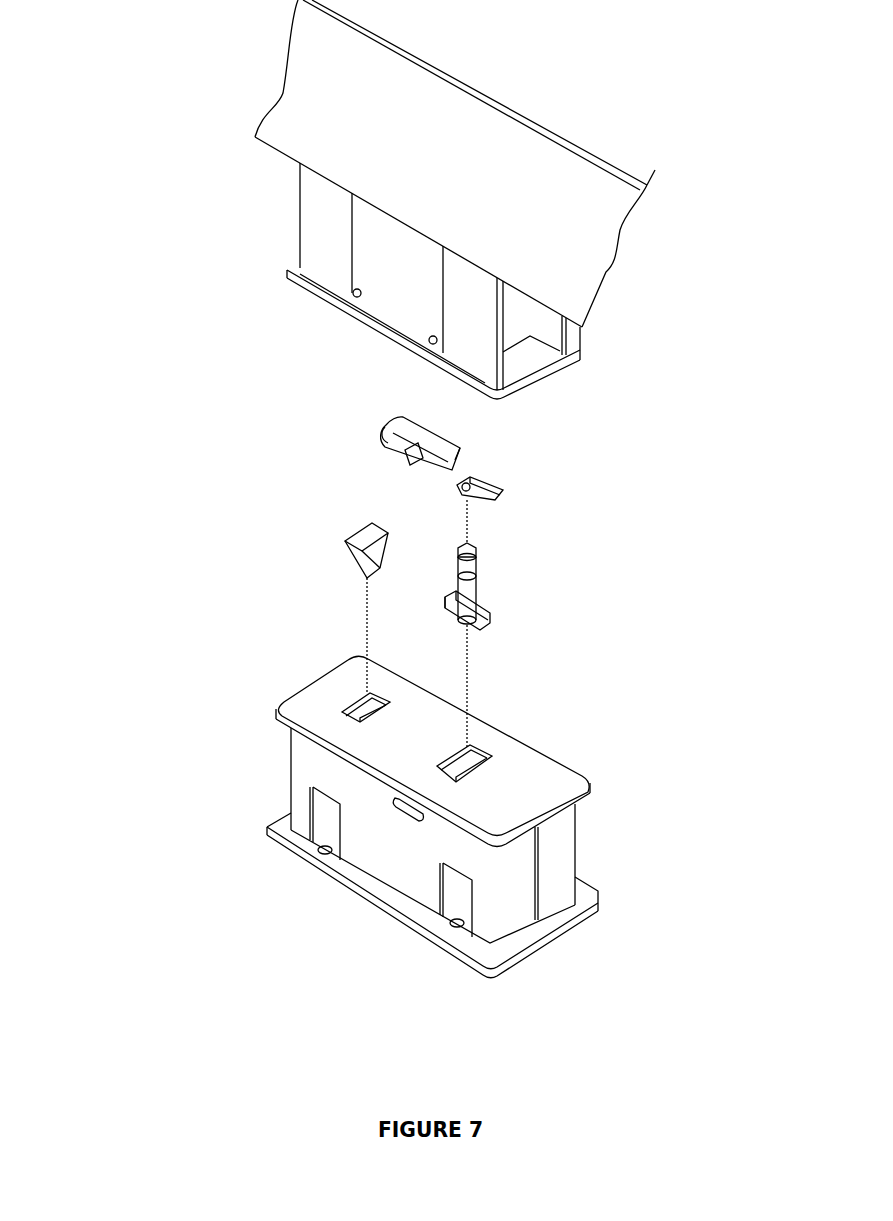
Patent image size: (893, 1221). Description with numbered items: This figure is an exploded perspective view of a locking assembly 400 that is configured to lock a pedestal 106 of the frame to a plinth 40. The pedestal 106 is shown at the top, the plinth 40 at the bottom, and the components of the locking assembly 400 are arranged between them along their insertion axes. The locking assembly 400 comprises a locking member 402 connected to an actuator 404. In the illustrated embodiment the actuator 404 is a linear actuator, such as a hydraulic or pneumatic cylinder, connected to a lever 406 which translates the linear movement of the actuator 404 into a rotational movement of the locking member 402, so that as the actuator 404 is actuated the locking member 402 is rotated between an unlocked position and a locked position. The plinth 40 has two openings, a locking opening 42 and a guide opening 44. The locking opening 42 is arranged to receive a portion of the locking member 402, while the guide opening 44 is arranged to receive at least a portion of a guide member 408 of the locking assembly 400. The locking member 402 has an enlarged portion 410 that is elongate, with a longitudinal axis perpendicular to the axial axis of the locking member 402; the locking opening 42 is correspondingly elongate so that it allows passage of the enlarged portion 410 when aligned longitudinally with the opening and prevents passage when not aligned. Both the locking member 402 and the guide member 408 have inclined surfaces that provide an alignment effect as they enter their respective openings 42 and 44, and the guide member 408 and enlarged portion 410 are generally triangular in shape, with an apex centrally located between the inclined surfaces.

The pedestal 106 is at (298, 220).
The locking assembly 400 is at (217, 423).
The actuator 404 is at (461, 449).
The lever 406 is at (499, 493).
The locking member 402 is at (474, 582).
The enlarged portion 410 is at (488, 622).
The guide member 408 is at (344, 545).
The plinth 40 is at (289, 758).
The guide opening 44 is at (344, 704).
The locking opening 42 is at (494, 757).